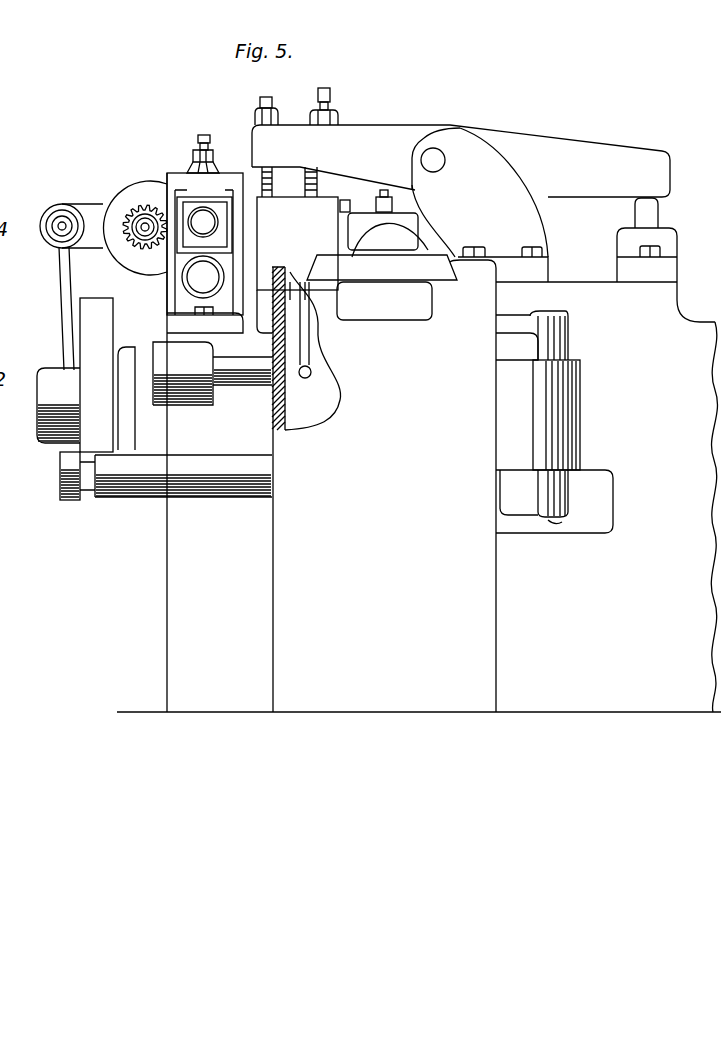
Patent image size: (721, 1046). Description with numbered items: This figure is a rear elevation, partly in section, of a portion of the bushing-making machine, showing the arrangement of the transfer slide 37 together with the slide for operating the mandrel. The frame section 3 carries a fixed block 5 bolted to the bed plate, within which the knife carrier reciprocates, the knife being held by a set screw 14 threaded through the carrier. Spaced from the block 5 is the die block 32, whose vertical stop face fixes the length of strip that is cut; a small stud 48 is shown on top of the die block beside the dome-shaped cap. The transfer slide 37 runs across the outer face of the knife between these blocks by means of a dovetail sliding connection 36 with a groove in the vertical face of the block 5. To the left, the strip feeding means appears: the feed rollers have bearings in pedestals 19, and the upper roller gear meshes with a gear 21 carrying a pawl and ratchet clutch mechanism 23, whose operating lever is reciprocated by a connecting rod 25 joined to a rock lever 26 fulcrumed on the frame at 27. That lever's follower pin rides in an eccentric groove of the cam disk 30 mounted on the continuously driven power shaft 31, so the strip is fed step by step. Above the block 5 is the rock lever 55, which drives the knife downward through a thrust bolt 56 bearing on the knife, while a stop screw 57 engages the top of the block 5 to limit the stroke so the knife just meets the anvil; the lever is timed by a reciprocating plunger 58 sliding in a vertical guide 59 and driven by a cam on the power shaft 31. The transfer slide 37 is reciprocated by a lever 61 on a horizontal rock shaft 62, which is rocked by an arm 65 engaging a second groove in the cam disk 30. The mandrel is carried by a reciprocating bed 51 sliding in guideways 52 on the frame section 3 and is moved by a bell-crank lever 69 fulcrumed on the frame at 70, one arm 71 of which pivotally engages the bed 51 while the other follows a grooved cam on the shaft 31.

The frame section 3 is at (670, 316).
The fixed block 5 is at (275, 213).
The set screw 14 is at (351, 207).
The pedestal 19 is at (183, 180).
The gear 21 is at (152, 190).
The pawl and ratchet clutch mechanism 23 is at (85, 213).
The connecting rod 25 is at (69, 270).
The rock lever 26 is at (62, 463).
The fulcrum 27 is at (62, 215).
The cam disk 30 is at (103, 313).
The power shaft 31 is at (33, 413).
The die block 32 is at (401, 227).
The dovetail sliding connection 36 is at (345, 222).
The transfer slide 37 is at (335, 244).
The stud 48 is at (380, 197).
The reciprocating bed 51 is at (408, 303).
The guideways 52 is at (462, 265).
The rock lever 55 is at (576, 149).
The thrust bolt 56 is at (327, 90).
The stop screw 57 is at (265, 100).
The reciprocating plunger 58 is at (650, 213).
The vertical guide 59 is at (672, 251).
The lever 61 is at (298, 333).
The rock shaft 62 is at (252, 389).
The arm 65 is at (125, 413).
The bell-crank lever 69 is at (579, 356).
The fulcrum 70 is at (508, 320).
The arm 71 is at (515, 323).